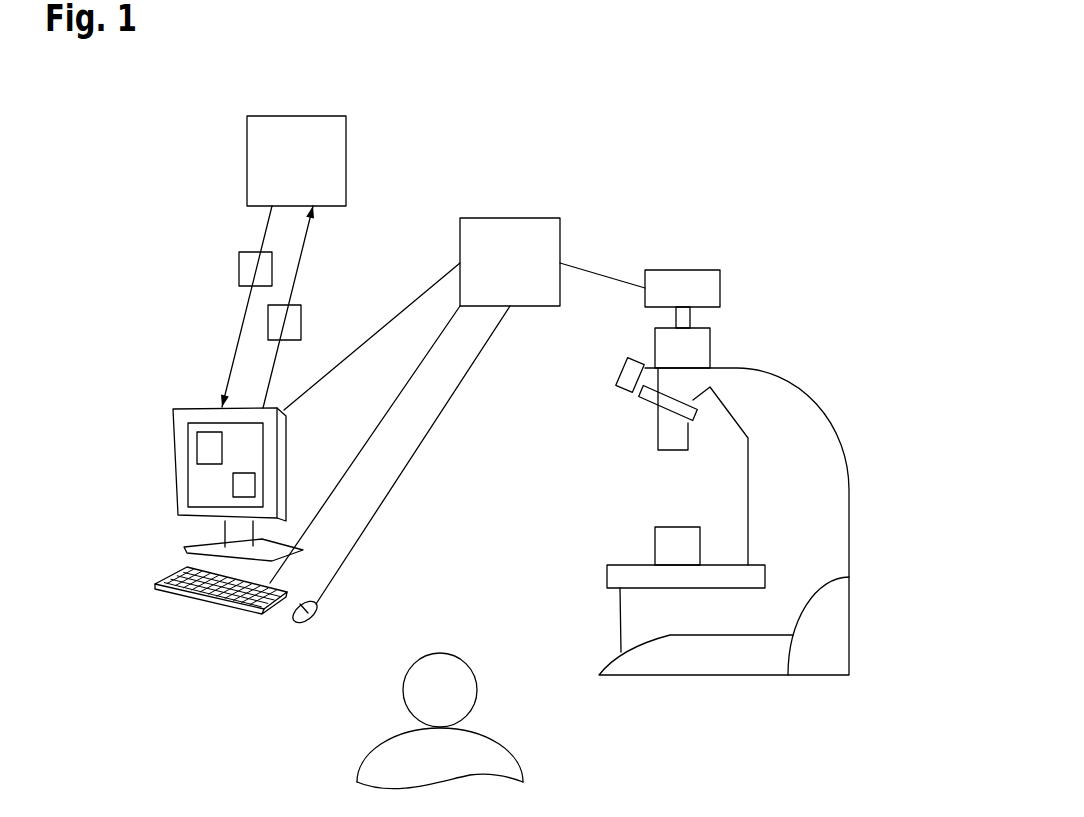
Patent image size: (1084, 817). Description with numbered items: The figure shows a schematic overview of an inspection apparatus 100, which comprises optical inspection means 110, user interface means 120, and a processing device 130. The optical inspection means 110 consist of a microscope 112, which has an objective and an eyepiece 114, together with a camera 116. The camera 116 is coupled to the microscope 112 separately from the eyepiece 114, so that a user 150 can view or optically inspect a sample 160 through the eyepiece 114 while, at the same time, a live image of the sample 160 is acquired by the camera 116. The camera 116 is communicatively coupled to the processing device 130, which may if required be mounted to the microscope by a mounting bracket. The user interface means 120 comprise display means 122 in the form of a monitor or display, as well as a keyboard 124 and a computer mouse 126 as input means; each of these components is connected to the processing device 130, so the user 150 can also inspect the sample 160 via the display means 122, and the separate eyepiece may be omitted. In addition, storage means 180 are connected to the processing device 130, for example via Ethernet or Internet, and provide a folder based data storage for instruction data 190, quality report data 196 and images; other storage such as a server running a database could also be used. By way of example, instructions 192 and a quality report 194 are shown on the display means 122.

The inspection apparatus 100 is at (838, 252).
The optical inspection means 110 is at (810, 343).
The microscope 112 is at (657, 441).
The eyepiece 114 is at (618, 370).
The camera 116 is at (702, 270).
The user interface means 120 is at (126, 478).
The display means 122 is at (192, 409).
The keyboard 124 is at (198, 604).
The computer mouse 126 is at (317, 616).
The processing device 130 is at (528, 218).
The user 150 is at (510, 703).
The sample 160 is at (655, 540).
The storage means 180 is at (316, 116).
The instruction data 190 is at (238, 267).
The instructions 192 is at (197, 442).
The quality report 194 is at (233, 487).
The quality report data 196 is at (301, 322).